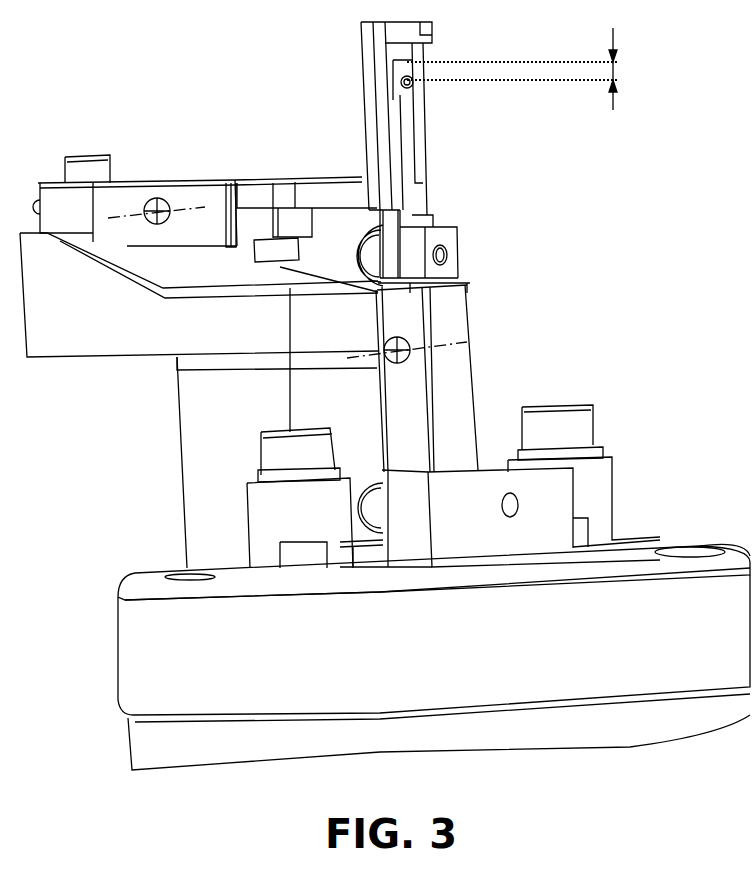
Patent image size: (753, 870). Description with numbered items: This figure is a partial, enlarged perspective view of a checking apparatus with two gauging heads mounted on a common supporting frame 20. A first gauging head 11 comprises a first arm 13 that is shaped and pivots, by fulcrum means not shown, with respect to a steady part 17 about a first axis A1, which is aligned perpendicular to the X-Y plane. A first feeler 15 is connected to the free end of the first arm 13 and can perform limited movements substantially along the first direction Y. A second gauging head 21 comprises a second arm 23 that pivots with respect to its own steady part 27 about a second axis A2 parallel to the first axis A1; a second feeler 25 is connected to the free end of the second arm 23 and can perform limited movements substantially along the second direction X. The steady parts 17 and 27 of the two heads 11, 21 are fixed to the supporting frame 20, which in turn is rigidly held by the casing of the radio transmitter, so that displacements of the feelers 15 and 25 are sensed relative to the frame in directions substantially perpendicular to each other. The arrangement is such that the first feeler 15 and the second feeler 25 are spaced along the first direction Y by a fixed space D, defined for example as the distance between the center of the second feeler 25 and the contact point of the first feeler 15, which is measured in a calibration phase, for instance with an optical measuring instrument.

The first gauging head 11 is at (199, 321).
The first arm 13 is at (310, 195).
The first feeler 15 is at (407, 62).
The steady part 17 is at (108, 208).
The supporting frame 20 is at (145, 678).
The second gauging head 21 is at (453, 378).
The second arm 23 is at (410, 220).
The second feeler 25 is at (410, 85).
The steady part 27 is at (450, 440).
The first axis A1 is at (168, 205).
The second axis A2 is at (410, 347).
The fixed space D is at (522, 69).